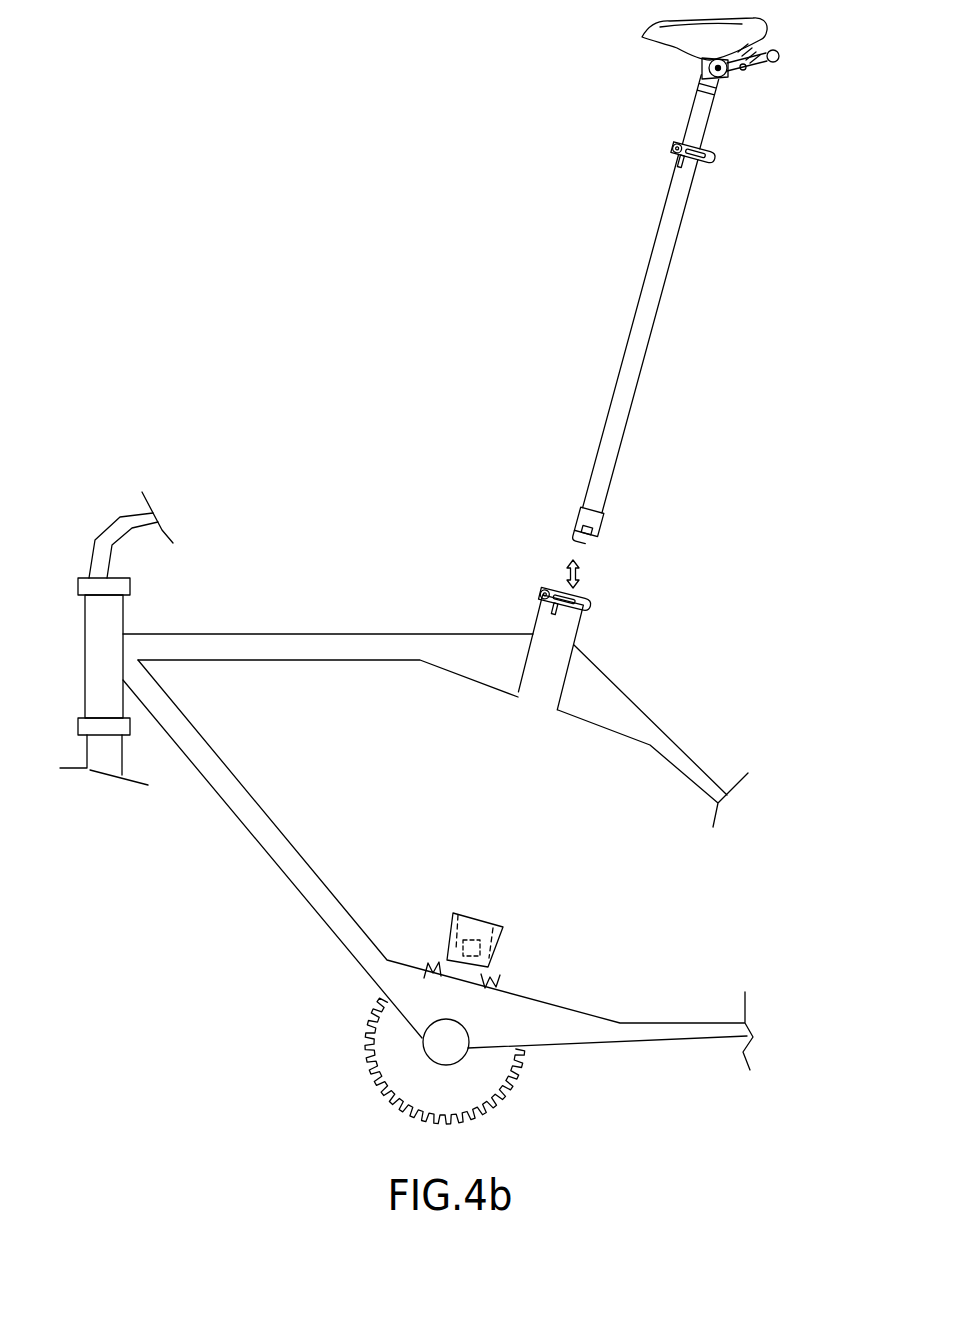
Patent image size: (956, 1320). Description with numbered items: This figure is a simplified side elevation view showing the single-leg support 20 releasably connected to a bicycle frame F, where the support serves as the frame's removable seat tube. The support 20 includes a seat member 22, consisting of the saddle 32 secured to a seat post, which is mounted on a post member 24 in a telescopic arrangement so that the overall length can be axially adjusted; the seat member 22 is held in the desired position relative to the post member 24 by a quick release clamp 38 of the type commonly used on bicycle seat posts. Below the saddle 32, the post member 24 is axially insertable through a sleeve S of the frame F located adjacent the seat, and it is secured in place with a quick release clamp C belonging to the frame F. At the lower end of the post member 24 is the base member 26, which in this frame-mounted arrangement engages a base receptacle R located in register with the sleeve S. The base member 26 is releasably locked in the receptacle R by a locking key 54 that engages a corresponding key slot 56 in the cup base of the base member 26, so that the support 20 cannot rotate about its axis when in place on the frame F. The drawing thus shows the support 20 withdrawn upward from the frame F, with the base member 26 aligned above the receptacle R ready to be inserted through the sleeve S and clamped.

The single-leg support 20 is at (538, 98).
The saddle 32 is at (655, 33).
The seat member 22 is at (705, 130).
The quick release clamp 38 is at (712, 163).
The post member 24 is at (648, 352).
The base member 26 is at (604, 520).
The key slot 56 is at (588, 543).
The bicycle frame F is at (405, 633).
The sleeve S is at (580, 630).
The quick release clamp C is at (580, 612).
The base receptacle R is at (502, 937).
The locking key 54 is at (476, 934).